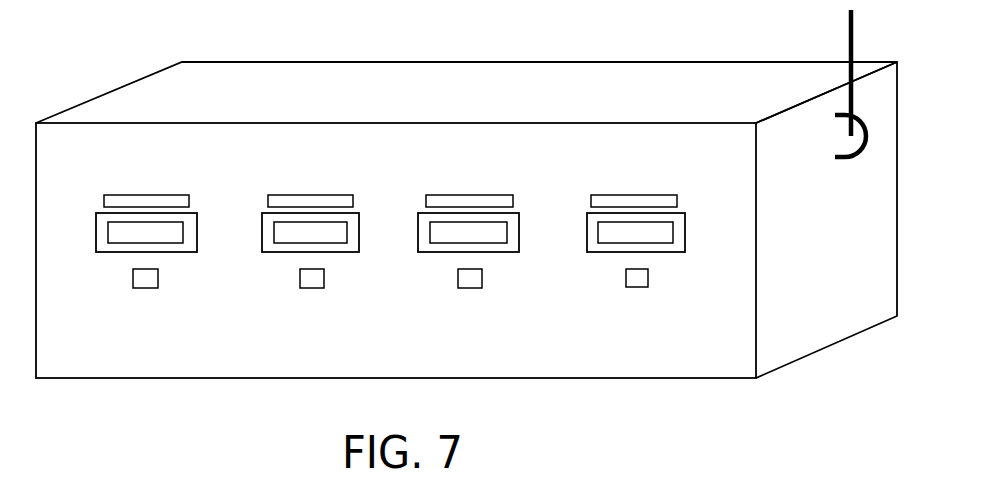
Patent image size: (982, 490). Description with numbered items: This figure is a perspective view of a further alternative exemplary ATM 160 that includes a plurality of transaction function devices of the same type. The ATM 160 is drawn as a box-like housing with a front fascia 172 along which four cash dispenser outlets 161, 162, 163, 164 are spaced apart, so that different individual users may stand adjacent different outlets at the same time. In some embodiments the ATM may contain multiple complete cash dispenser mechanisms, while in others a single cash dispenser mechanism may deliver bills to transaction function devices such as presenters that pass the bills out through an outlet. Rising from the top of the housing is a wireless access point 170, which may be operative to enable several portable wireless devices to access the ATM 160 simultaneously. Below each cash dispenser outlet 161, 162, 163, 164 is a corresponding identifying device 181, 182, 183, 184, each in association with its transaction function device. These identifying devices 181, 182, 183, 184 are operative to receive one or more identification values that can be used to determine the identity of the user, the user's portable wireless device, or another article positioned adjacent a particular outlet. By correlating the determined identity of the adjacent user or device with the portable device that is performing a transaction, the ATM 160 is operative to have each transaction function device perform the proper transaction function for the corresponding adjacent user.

The ATM 160 is at (505, 93).
The cash dispenser outlet 161 is at (96, 237).
The cash dispenser outlet 162 is at (262, 237).
The cash dispenser outlet 163 is at (418, 237).
The cash dispenser outlet 164 is at (587, 237).
The wireless access point 170 is at (847, 160).
The fascia 172 is at (662, 342).
The identifying device 181 is at (133, 278).
The identifying device 182 is at (300, 278).
The identifying device 183 is at (458, 278).
The identifying device 184 is at (626, 278).